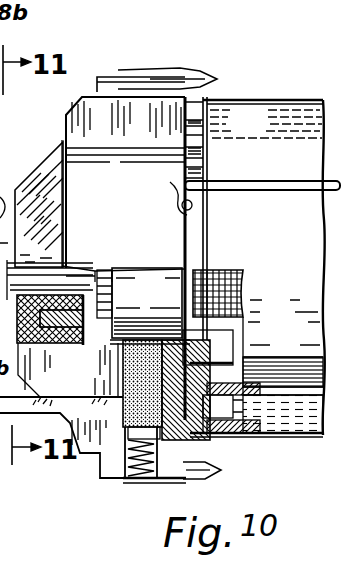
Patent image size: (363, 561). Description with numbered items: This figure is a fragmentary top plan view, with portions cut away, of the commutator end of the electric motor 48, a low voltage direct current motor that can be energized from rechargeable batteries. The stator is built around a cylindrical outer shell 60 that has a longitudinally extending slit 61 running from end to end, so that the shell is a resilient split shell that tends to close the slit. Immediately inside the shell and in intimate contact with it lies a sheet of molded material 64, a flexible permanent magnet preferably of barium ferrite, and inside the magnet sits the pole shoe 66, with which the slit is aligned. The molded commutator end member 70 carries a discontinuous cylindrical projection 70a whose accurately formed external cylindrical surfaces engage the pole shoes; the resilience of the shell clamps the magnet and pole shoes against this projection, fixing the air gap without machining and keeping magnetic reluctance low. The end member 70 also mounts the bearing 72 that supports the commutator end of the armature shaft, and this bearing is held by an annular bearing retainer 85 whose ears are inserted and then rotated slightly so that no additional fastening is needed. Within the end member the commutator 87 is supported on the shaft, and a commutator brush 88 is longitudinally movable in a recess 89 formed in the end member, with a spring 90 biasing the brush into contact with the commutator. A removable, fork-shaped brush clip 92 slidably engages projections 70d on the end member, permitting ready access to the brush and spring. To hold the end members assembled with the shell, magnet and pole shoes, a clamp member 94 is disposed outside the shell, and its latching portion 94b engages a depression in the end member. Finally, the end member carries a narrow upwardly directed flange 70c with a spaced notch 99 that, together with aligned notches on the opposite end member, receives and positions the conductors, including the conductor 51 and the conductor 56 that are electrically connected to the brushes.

The motor 48 is at (252, 94).
The conductor 51 is at (8, 178).
The conductor 56 is at (36, 419).
The cylindrical outer shell 60 is at (292, 103).
The longitudinally extending slit 61 is at (265, 399).
The sheet of molded material 64 is at (283, 438).
The pole shoe 66 is at (258, 361).
The commutator end member 70 is at (132, 117).
The discontinuous cylindrical projection 70a is at (240, 337).
The flange 70c is at (207, 164).
The projections 70d is at (104, 74).
The bearing 72 is at (85, 267).
The bearing retainer 85 is at (93, 334).
The commutator 87 is at (143, 306).
The commutator brush 88 is at (211, 385).
The recess 89 is at (195, 438).
The spring 90 is at (137, 484).
The brush clip 92 is at (182, 72).
The clamp member 94 is at (268, 182).
The latching portion 94b is at (155, 188).
The notch 99 is at (266, 124).